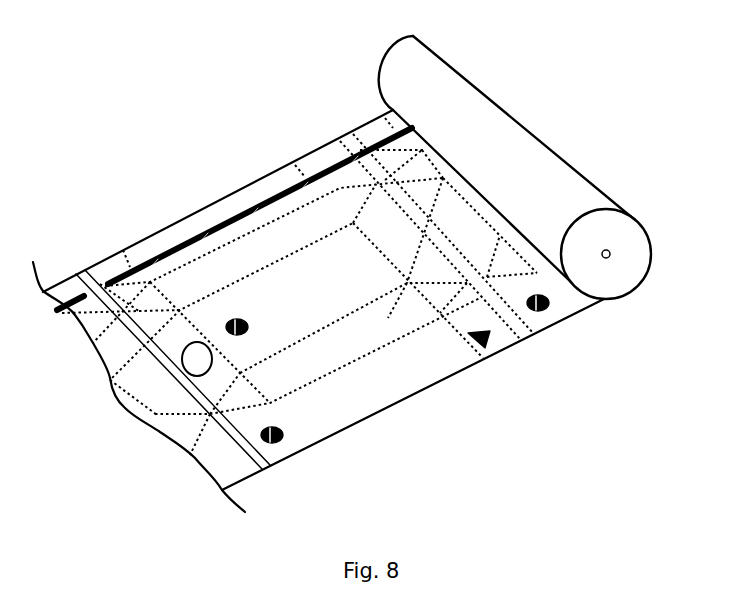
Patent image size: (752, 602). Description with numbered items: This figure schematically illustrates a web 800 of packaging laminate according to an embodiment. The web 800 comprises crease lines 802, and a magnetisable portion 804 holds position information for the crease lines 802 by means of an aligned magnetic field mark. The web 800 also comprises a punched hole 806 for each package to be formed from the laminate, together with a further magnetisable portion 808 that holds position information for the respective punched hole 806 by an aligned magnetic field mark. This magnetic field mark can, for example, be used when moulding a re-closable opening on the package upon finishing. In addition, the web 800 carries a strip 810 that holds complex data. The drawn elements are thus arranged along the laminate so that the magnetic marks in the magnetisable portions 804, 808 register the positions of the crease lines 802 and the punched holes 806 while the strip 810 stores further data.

The web 800 is at (578, 303).
The crease lines 802 is at (487, 342).
The magnetisable portion 804 is at (281, 438).
The punched hole 806 is at (197, 359).
The magnetisable portion 808 is at (246, 329).
The strip 810 is at (222, 226).